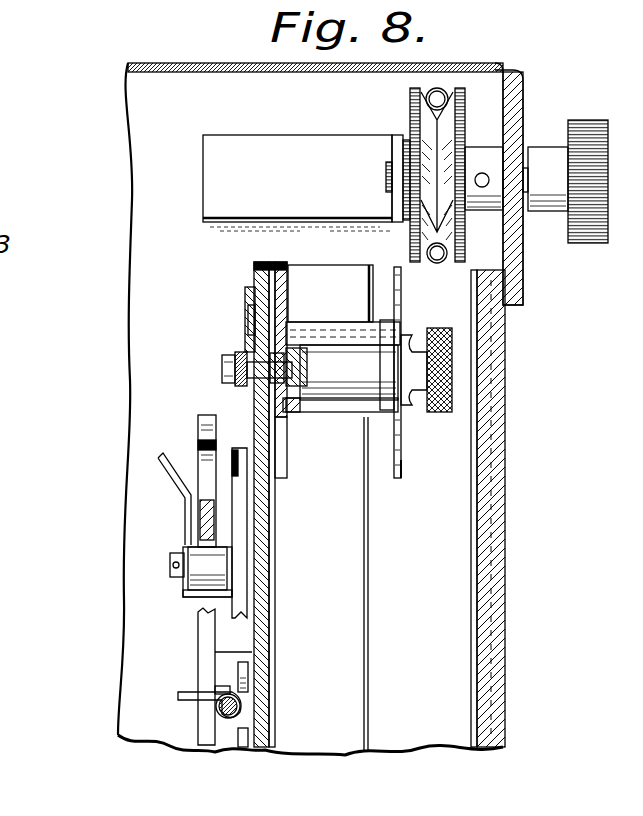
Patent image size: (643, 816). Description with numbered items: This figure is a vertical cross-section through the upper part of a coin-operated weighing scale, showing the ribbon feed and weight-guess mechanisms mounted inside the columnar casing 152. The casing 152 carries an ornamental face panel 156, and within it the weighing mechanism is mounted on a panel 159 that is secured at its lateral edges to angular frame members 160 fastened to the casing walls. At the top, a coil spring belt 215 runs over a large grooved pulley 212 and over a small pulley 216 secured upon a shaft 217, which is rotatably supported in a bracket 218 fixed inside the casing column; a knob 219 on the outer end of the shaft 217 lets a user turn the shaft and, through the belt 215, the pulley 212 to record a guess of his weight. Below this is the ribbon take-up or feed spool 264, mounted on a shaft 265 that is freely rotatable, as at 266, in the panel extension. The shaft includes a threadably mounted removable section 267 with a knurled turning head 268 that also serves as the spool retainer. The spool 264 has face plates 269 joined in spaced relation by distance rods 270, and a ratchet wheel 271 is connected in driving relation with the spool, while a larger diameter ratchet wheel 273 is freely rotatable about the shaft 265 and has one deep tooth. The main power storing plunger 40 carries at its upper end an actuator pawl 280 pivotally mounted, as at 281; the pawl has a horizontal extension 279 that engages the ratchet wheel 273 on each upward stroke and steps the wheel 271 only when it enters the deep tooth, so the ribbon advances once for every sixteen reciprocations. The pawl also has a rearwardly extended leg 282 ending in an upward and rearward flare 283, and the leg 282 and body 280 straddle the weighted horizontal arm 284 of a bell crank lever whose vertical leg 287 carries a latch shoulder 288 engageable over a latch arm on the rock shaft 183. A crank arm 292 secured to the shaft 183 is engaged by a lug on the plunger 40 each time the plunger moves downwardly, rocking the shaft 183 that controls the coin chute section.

The columnar casing 152 is at (209, 56).
The small pulley 216 is at (457, 115).
The ornamental face panel 156 is at (488, 386).
The bracket 218 is at (242, 117).
The shaft 217 is at (387, 170).
The coil spring belt 215 is at (441, 92).
The knob 219 is at (612, 103).
The panel 159 is at (268, 575).
The angular frame members 160 is at (276, 478).
The face plates 269 is at (256, 263).
The larger diameter ratchet wheel 273 is at (250, 297).
The ratchet wheel 271 is at (253, 309).
The shaft 265 is at (277, 363).
The distance rods 270 is at (337, 332).
The large grooved pulley 212 is at (286, 346).
The removable section 267 is at (349, 372).
The shaft mounting 266 is at (289, 414).
The knurled turning head 268 is at (450, 343).
The take-up or feed spool 264 is at (404, 468).
The weighted horizontal arm 284 is at (207, 415).
The upward and rearward flare 283 is at (162, 458).
The horizontal extension 279 is at (230, 470).
The main power storing plunger 40 is at (244, 607).
The rearwardly extended leg 282 is at (180, 553).
The pivotal mounting 281 is at (172, 575).
The actuator pawl 280 is at (183, 592).
The vertical leg 287 is at (194, 630).
The latch shoulder 288 is at (200, 692).
The crank arm 292 is at (180, 696).
The rod 183 is at (222, 716).